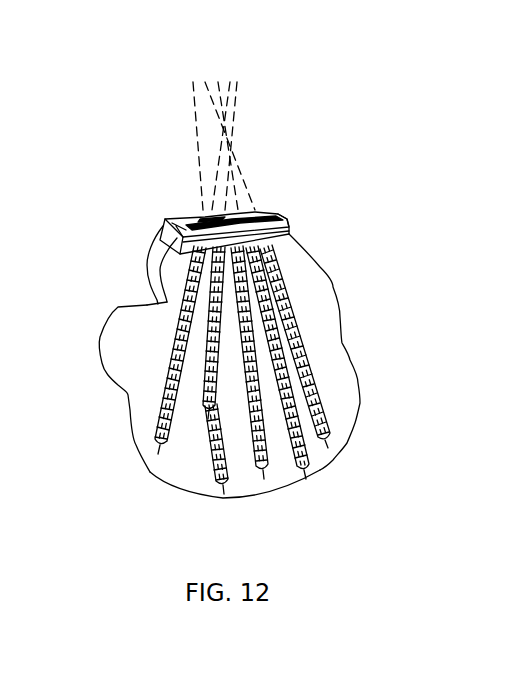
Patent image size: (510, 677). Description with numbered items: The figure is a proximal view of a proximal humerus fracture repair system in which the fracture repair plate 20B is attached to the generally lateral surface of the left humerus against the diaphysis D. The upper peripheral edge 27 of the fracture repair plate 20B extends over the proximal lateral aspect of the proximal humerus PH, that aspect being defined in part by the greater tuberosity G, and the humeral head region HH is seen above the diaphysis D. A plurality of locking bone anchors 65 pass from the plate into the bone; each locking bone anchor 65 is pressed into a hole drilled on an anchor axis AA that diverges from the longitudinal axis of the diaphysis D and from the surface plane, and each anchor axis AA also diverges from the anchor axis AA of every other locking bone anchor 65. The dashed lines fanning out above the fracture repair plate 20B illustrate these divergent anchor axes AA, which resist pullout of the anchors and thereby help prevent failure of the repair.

The anchor axis AA is at (248, 69).
The fracture repair plate 20B is at (164, 220).
The upper peripheral edge 27 is at (290, 226).
The diaphysis D is at (152, 252).
The proximal humerus PH is at (129, 432).
The hand HH is at (352, 411).
The greater tuberosity G is at (309, 260).
The locking bone anchors 65 is at (303, 463).